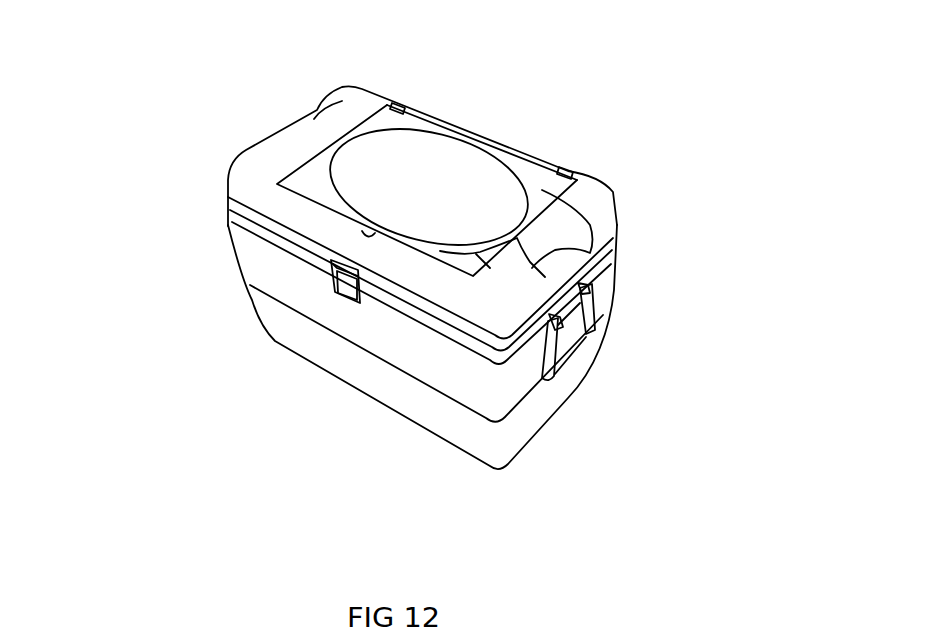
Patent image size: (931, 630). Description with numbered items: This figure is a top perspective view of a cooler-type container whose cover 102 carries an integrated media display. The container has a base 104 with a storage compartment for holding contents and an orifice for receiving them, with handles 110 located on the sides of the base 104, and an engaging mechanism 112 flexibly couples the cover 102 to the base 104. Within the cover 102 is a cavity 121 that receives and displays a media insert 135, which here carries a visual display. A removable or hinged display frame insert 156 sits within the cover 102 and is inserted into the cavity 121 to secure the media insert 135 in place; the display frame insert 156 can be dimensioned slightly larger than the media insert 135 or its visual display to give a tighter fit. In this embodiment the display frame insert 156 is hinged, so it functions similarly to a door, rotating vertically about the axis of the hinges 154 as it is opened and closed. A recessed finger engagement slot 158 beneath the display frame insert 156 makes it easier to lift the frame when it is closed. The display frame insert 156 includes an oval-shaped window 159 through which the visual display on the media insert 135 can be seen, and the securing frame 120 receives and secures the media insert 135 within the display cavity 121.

The cover 102 is at (613, 200).
The base 104 is at (553, 412).
The handles 110 is at (595, 333).
The engaging mechanism 112 is at (333, 270).
The recessed frame 120 is at (374, 126).
The cavity 121 is at (545, 274).
The media insert 135 is at (453, 150).
The hinges 154 is at (396, 104).
The display frame insert 156 is at (315, 186).
The recessed finger engagement slot 158 is at (367, 233).
The oval-shaped window 159 is at (492, 142).